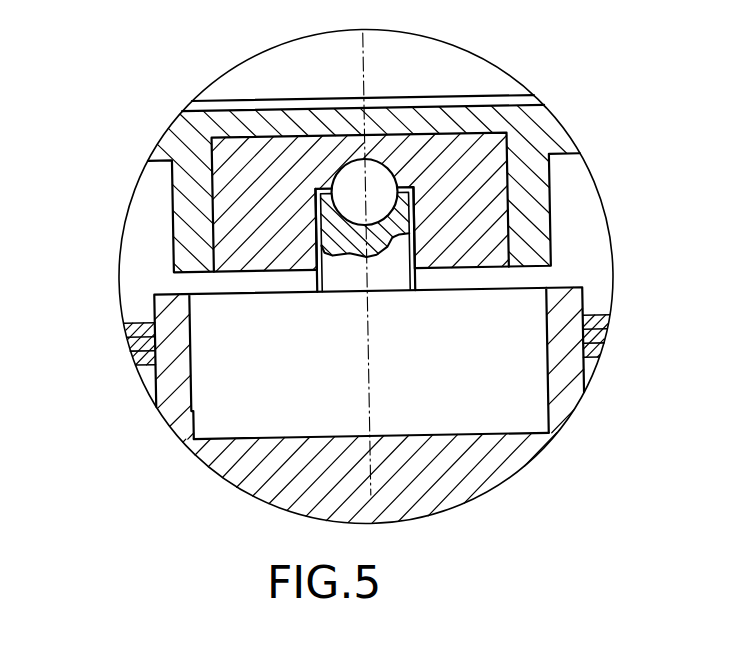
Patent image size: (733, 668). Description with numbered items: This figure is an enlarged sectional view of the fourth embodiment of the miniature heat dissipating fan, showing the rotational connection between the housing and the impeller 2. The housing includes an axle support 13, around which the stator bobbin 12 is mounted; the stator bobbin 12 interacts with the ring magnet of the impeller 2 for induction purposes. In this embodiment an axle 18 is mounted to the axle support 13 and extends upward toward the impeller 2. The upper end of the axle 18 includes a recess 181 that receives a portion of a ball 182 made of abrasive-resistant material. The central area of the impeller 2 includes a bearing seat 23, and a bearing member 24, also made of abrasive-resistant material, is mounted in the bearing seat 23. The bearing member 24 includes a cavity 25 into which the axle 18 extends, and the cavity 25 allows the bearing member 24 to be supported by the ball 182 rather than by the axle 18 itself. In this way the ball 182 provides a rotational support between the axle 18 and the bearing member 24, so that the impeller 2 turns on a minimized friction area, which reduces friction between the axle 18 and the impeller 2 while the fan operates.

The impeller 2 is at (451, 121).
The bearing seat 23 is at (541, 230).
The bearing member 24 is at (252, 153).
The cavity 25 is at (309, 234).
The recess 181 is at (392, 253).
The ball 182 is at (392, 253).
The axle support 13 is at (561, 377).
The axle 18 is at (275, 422).
The stator bobbin 12 is at (597, 349).